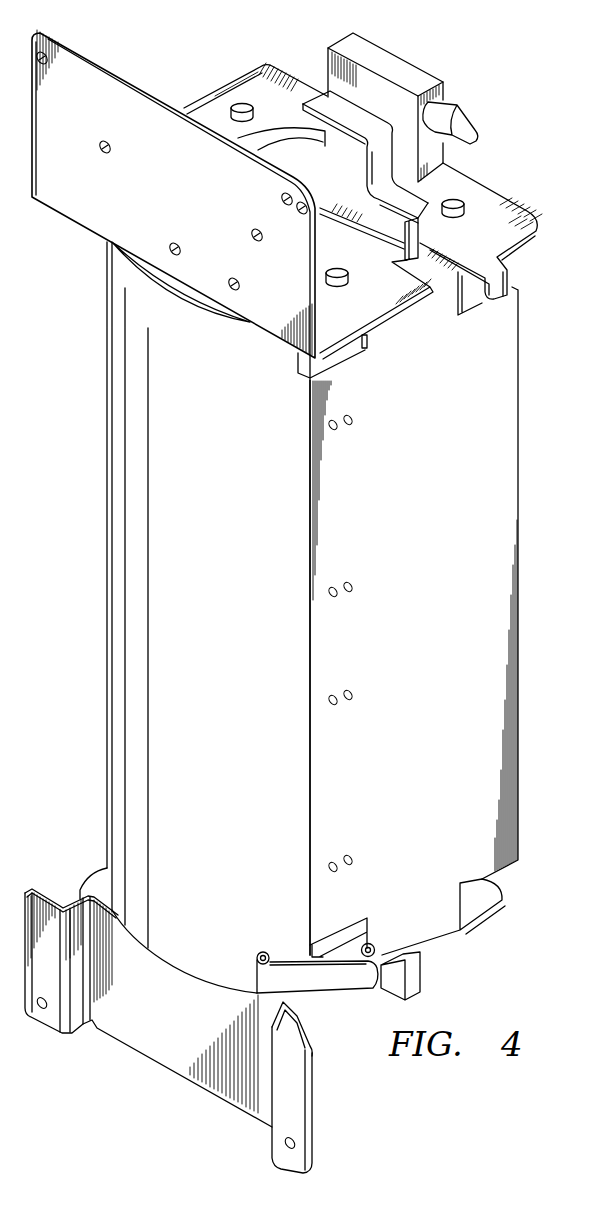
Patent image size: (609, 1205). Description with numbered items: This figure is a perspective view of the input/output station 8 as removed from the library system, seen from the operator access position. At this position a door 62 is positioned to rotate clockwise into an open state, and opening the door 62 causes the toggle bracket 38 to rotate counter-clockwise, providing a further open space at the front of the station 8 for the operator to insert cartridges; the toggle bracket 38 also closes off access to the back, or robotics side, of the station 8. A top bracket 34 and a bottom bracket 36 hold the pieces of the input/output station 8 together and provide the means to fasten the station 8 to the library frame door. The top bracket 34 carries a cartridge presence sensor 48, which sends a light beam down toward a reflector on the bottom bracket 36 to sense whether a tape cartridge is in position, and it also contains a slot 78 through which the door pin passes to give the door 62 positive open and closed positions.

The input/output station 8 is at (88, 318).
The top bracket 34 is at (121, 100).
The bottom bracket 36 is at (297, 1075).
The toggle bracket 38 is at (507, 462).
The cartridge presence sensor 48 is at (387, 65).
The door 62 is at (120, 658).
The slot 78 is at (384, 223).